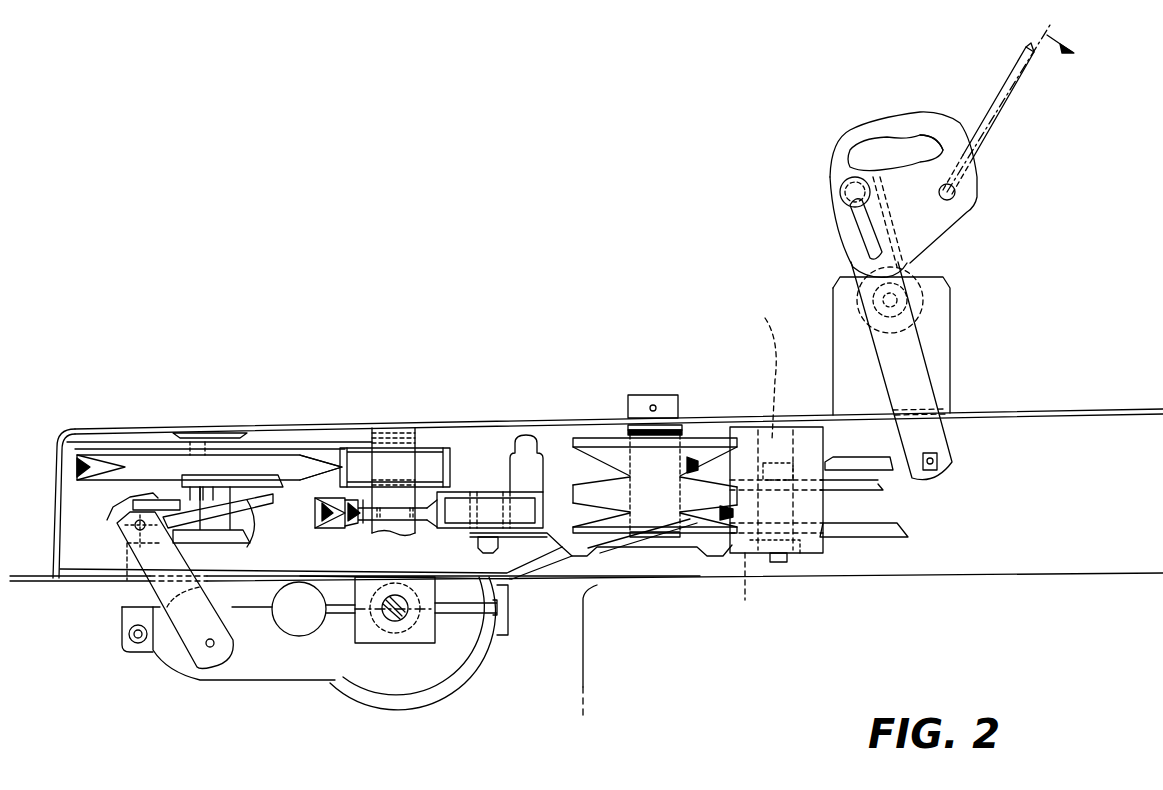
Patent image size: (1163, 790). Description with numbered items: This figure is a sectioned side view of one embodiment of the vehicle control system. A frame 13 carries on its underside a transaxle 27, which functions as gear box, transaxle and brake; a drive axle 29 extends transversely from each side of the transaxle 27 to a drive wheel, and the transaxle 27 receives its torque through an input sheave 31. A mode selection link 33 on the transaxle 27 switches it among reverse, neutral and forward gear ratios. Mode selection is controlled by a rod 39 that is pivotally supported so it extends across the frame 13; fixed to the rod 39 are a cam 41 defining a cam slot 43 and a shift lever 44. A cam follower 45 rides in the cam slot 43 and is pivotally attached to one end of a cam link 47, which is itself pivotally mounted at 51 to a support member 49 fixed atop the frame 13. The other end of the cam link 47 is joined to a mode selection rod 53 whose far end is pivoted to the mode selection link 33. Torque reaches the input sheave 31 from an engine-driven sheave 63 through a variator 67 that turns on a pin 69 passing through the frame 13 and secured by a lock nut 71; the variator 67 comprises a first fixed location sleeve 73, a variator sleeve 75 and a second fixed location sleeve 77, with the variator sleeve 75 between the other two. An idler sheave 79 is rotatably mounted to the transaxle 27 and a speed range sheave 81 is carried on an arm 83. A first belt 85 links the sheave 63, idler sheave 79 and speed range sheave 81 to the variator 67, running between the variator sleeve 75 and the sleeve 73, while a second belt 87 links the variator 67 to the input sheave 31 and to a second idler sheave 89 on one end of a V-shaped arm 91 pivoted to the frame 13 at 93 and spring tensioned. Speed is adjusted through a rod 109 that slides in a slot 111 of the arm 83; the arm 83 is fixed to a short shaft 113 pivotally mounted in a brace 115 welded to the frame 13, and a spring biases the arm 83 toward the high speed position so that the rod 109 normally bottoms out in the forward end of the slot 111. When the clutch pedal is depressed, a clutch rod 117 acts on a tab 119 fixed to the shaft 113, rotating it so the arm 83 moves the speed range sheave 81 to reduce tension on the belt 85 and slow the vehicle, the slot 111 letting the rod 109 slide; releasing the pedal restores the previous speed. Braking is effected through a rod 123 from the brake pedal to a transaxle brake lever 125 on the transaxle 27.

The frame 13 is at (40, 578).
The transaxle 27 is at (120, 598).
The drive axle 29 is at (390, 617).
The input sheave 31 is at (115, 486).
The mode selection link 33 is at (125, 505).
The rod 39 is at (950, 197).
The cam 41 is at (977, 178).
The cam slot 43 is at (933, 143).
The shift lever 44 is at (1015, 103).
The cam follower 45 is at (840, 199).
The cam link 47 is at (888, 393).
The support member 49 is at (952, 320).
The pivot 51 is at (882, 305).
The mode selection rod 53 is at (243, 473).
The sheave 63 is at (358, 498).
The variator 67 is at (598, 544).
The pin 69 is at (686, 405).
The lock nut 71 is at (632, 395).
The first fixed location sleeve 73 is at (700, 520).
The variator sleeve 75 is at (748, 440).
The second fixed location sleeve 77 is at (690, 438).
The idler sheave 79 is at (318, 498).
The speed range sheave 81 is at (543, 496).
The arm 83 is at (640, 560).
The first belt 85 is at (312, 511).
The second belt 87 is at (705, 460).
The second idler sheave 89 is at (443, 448).
The V-shaped arm 91 is at (265, 450).
The pivot 93 is at (206, 432).
The rod 109 is at (893, 540).
The slot 111 is at (728, 555).
The short shaft 113 is at (745, 590).
The brace 115 is at (828, 548).
The clutch rod 117 is at (860, 489).
The tab 119 is at (766, 318).
The rod 123 is at (250, 528).
The transaxle brake lever 125 is at (185, 658).